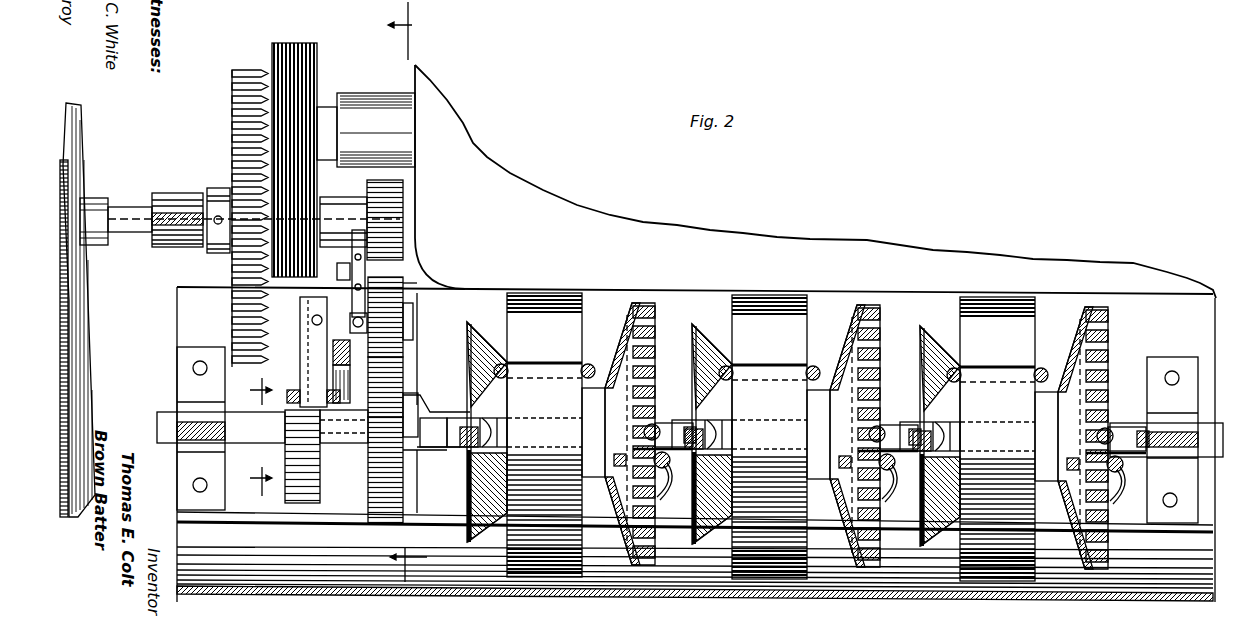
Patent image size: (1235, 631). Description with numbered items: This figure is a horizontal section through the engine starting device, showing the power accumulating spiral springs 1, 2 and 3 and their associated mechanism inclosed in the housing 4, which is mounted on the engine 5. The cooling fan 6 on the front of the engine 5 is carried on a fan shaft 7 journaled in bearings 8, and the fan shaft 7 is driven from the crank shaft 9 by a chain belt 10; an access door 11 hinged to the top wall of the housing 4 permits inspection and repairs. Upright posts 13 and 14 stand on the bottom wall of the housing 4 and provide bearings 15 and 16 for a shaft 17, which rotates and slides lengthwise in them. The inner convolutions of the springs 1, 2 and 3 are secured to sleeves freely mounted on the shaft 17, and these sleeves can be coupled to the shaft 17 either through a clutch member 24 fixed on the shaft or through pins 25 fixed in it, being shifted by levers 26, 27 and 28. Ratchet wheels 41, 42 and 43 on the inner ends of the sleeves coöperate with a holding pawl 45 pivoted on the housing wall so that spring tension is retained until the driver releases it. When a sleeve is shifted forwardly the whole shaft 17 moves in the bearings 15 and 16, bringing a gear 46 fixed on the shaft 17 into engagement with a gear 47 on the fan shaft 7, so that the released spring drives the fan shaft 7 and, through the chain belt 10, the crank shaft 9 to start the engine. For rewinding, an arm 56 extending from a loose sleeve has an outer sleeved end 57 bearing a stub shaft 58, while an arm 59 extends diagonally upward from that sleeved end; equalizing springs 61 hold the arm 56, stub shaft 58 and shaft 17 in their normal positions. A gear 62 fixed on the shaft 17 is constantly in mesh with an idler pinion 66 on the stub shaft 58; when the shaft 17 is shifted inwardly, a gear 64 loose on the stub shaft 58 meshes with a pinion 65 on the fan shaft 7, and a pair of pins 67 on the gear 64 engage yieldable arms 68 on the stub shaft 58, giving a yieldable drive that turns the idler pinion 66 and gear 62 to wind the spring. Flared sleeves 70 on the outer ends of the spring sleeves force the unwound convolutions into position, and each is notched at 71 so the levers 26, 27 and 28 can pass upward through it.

The spiral spring 1 is at (566, 319).
The spiral spring 2 is at (796, 319).
The spiral spring 3 is at (1026, 319).
The housing 4 is at (407, 294).
The engine 5 is at (527, 197).
The cooling fan 6 is at (83, 413).
The fan shaft 7 is at (128, 210).
The bearings 8 is at (168, 194).
The crank shaft 9 is at (326, 108).
The chain belt 10 is at (297, 44).
The access door 11 is at (928, 565).
The upright post 13 is at (185, 408).
The upright post 14 is at (1182, 450).
The bearing 15 is at (177, 458).
The bearing 16 is at (1163, 487).
The shaft 17 is at (156, 423).
The clutch member 24 is at (418, 407).
The pin 25 is at (656, 425).
The lever 26 is at (457, 452).
The lever 27 is at (682, 485).
The lever 28 is at (907, 490).
The ratchet wheel 41 is at (623, 360).
The ratchet wheel 42 is at (848, 362).
The ratchet wheel 43 is at (1082, 360).
The holding pawl 45 is at (658, 496).
The gear 46 is at (320, 470).
The gear 47 is at (234, 258).
The arm 56 is at (331, 373).
The sleeved end 57 is at (326, 310).
The stub shaft 58 is at (410, 284).
The arm 59 is at (340, 343).
The equalizing springs 61 is at (400, 362).
The gear 62 is at (385, 500).
The gear 64 is at (372, 270).
The pinion 65 is at (390, 214).
The idler pinion 66 is at (405, 314).
The pins 67 is at (339, 275).
The yieldable arms 68 is at (302, 312).
The flared sleeve 70 is at (473, 338).
The notch 71 is at (496, 408).